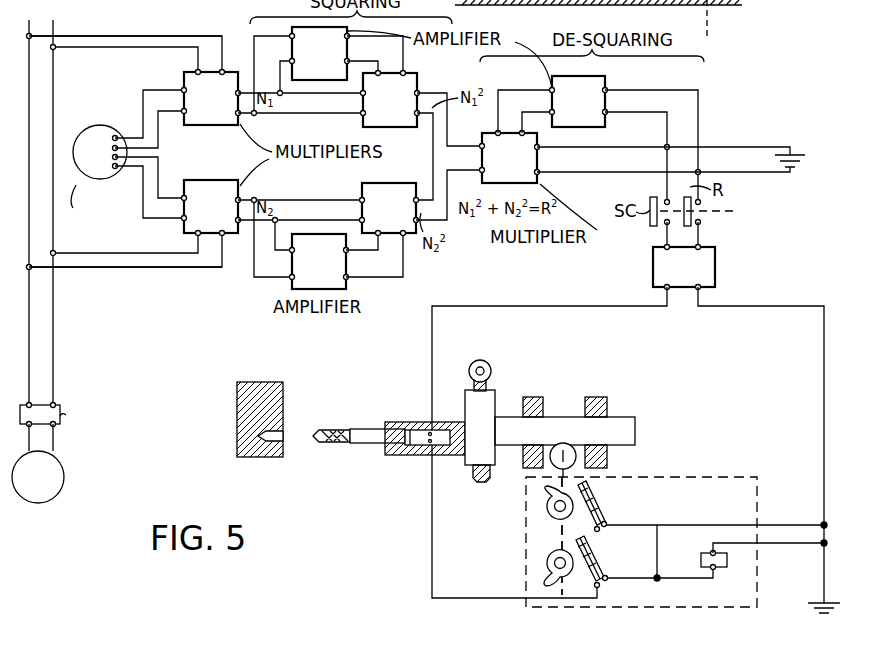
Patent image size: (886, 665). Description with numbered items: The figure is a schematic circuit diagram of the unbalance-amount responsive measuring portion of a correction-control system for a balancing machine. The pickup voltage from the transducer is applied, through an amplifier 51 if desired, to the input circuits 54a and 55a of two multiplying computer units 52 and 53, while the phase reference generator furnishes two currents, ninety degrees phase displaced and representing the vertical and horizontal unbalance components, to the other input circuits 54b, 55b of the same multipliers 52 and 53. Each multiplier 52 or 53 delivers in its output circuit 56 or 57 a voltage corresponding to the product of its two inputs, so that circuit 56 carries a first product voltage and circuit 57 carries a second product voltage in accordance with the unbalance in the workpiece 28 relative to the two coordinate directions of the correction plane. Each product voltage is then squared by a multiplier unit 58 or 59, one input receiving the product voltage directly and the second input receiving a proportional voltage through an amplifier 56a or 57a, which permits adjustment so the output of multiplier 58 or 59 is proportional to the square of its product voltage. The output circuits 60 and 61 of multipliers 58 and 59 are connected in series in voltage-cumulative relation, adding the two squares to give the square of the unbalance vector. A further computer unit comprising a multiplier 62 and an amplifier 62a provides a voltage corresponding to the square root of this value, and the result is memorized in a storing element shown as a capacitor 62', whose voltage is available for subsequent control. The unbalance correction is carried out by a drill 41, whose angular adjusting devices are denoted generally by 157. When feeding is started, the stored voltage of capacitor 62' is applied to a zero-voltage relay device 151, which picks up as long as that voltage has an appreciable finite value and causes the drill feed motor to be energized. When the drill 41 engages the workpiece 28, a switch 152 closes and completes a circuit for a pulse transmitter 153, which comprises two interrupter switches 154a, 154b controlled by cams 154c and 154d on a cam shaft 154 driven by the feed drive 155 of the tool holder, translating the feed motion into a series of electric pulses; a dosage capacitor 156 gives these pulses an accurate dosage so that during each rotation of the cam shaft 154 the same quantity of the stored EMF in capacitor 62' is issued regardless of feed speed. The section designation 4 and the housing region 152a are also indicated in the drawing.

The section line of FIG. 4 is at (707, 25).
The workpiece 28 is at (265, 382).
The drill 41 is at (313, 434).
The amplifier 51 is at (58, 409).
The multiplying computer unit 52 is at (184, 78).
The multiplying computer unit 53 is at (226, 188).
The input circuit 54a is at (75, 36).
The input circuit 54b is at (162, 104).
The input circuit 55a is at (107, 257).
The input circuit 55b is at (150, 230).
The output circuit 56 is at (318, 94).
The amplifier 56a is at (328, 81).
The output circuit 57 is at (308, 220).
The amplifier 57a is at (290, 284).
The multiplier unit 58 is at (410, 80).
The multiplier unit 59 is at (385, 185).
The output circuit 60 is at (420, 100).
The output circuit 61 is at (433, 212).
The multiplier 62 is at (502, 145).
The amplifier 62a is at (604, 85).
The capacitor 62' is at (681, 154).
The zero-voltage relay device 151 is at (712, 257).
The switch 152 is at (410, 424).
The switch housing 152a is at (432, 520).
The pulse transmitter 153 is at (526, 556).
The cam shaft 154 is at (560, 538).
The interrupter switch 154a is at (600, 513).
The interrupter switch 154b is at (598, 567).
The cam 154c is at (547, 503).
The cam 154d is at (548, 575).
The feed drive 155 is at (573, 468).
The capacitor 156 is at (718, 572).
The devices for angularly adjusting the drill 157 is at (488, 376).